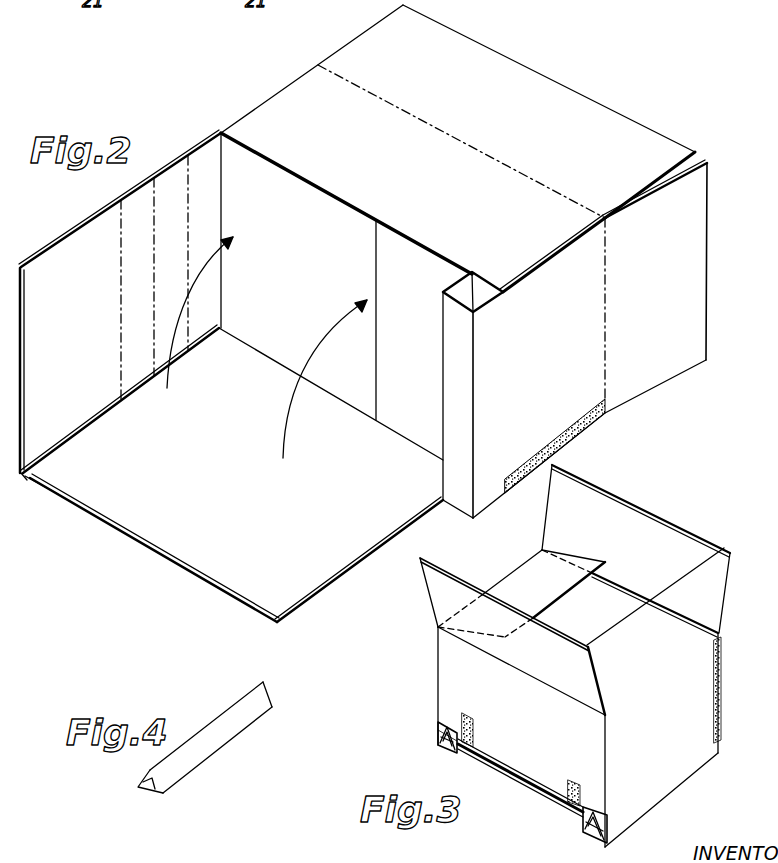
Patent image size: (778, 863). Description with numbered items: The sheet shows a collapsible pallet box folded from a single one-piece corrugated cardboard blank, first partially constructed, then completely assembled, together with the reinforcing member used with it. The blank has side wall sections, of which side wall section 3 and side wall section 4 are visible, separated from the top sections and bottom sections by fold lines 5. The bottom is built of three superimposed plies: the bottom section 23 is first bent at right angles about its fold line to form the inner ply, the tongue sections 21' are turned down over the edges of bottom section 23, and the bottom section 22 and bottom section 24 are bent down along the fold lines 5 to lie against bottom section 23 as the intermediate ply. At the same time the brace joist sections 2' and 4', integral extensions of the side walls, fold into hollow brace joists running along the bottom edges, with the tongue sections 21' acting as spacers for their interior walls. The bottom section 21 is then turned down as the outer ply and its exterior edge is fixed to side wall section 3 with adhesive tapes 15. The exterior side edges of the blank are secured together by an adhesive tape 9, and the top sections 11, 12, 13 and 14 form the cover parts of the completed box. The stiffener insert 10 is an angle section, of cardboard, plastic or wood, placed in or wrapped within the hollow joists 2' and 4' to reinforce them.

In FIG. 2, the brace joist section 2' is at (159, 253).
In FIG. 3, the brace joist section 2' is at (442, 753).
In FIG. 2, the side wall section 3 is at (426, 184).
In FIG. 3, the side wall section 3 is at (528, 723).
In FIG. 2, the side wall section 4 is at (539, 432).
In FIG. 3, the side wall section 4 is at (661, 740).
In FIG. 2, the brace joist section 4' is at (465, 400).
In FIG. 3, the brace joist section 4' is at (592, 830).
In FIG. 2, the fold lines 5 is at (185, 237).
In FIG. 2, the adhesive tape 9 is at (562, 440).
In FIG. 3, the adhesive tape 9 is at (720, 685).
In FIG. 3, the stiffener insert 10 is at (442, 747).
In FIG. 4, the stiffener insert 10 is at (205, 737).
In FIG. 3, the top section 11 is at (652, 561).
In FIG. 3, the top section 12 is at (544, 601).
In FIG. 2, the top section 13 is at (525, 122).
In FIG. 3, the top section 13 is at (538, 656).
In FIG. 2, the top section 14 is at (666, 305).
In FIG. 3, the top section 14 is at (668, 656).
In FIG. 3, the adhesive tapes 15 is at (472, 723).
In FIG. 2, the bottom section 21 is at (236, 461).
In FIG. 3, the bottom section 21 is at (520, 778).
In FIG. 2, the tongue section 21' is at (311, 330).
In FIG. 3, the tongue section 21' is at (459, 701).
In FIG. 2, the bottom section 22 is at (88, 355).
In FIG. 3, the bottom section 22 is at (493, 758).
In FIG. 2, the bottom section 23 is at (308, 279).
In FIG. 2, the bottom section 24 is at (398, 320).
In FIG. 3, the bottom section 24 is at (545, 782).